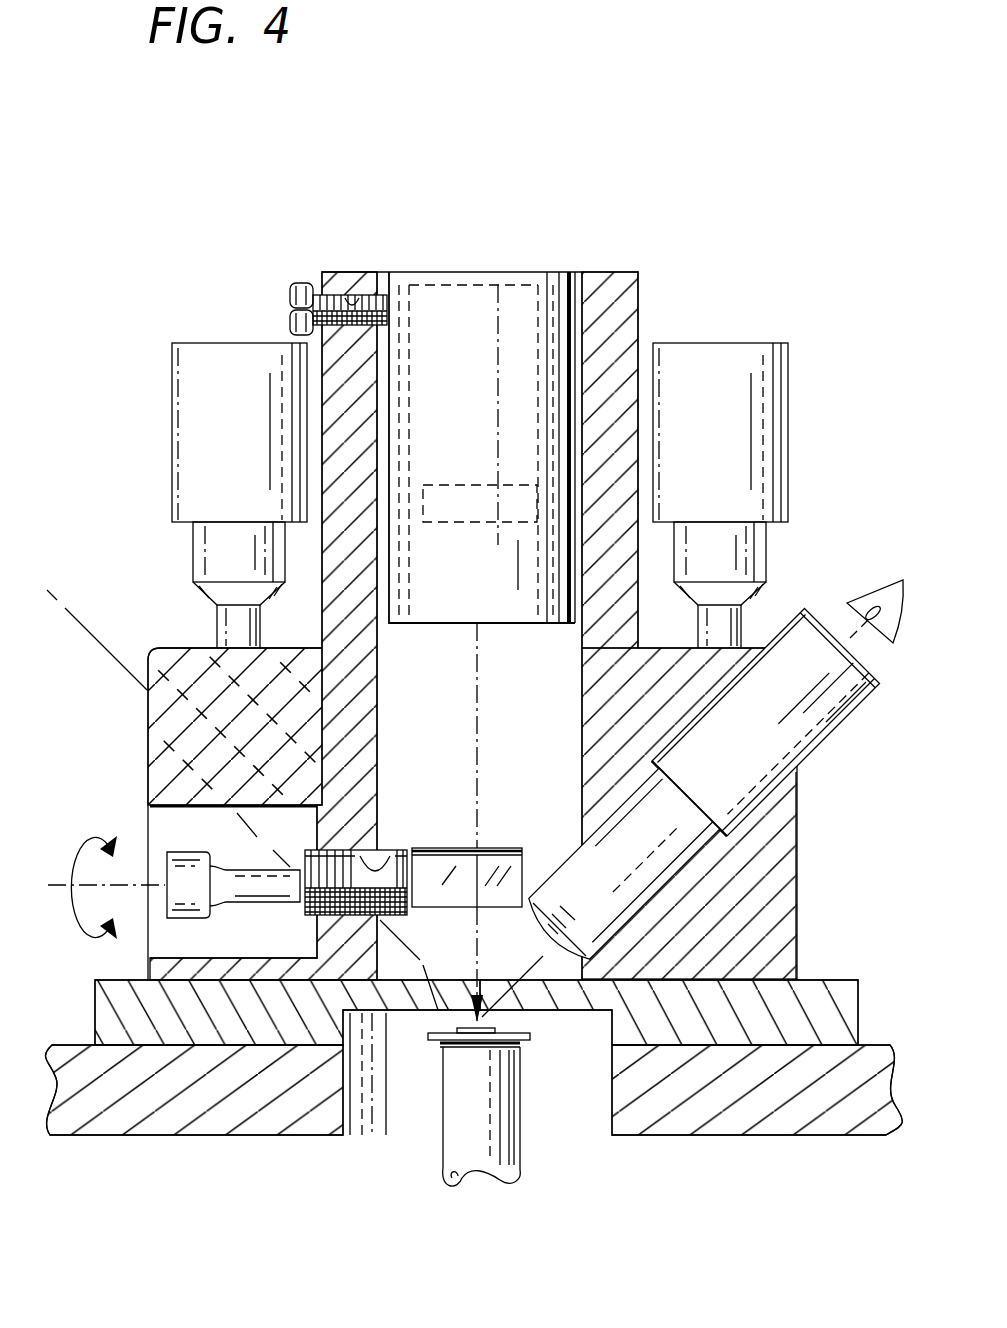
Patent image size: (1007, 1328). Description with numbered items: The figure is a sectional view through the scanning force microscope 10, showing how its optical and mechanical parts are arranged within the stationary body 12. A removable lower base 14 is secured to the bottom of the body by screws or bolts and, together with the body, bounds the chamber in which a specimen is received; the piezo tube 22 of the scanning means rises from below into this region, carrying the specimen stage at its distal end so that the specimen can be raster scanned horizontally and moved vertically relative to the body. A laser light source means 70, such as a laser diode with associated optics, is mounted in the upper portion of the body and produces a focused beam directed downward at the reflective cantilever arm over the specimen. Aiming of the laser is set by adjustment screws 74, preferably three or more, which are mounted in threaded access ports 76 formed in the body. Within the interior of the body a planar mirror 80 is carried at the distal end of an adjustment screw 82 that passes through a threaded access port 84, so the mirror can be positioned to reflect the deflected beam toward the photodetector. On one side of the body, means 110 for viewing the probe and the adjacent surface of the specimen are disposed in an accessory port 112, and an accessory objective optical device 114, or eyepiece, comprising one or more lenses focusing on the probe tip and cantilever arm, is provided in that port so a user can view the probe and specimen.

The scanning force microscope 10 is at (676, 246).
The stationary body 12 is at (640, 317).
The removable lower base 14 is at (827, 975).
The piezo tube 22 is at (458, 1153).
The laser light source means 70 is at (460, 320).
The adjustment screws 74 is at (291, 292).
The threaded access ports 76 is at (367, 312).
The planar mirror 80 is at (437, 876).
The adjustment screw 82 is at (252, 892).
The threaded access port 84 is at (383, 850).
The means for viewing 110 is at (745, 778).
The accessory port 112 is at (642, 911).
The accessory objective optical device 114 is at (810, 613).